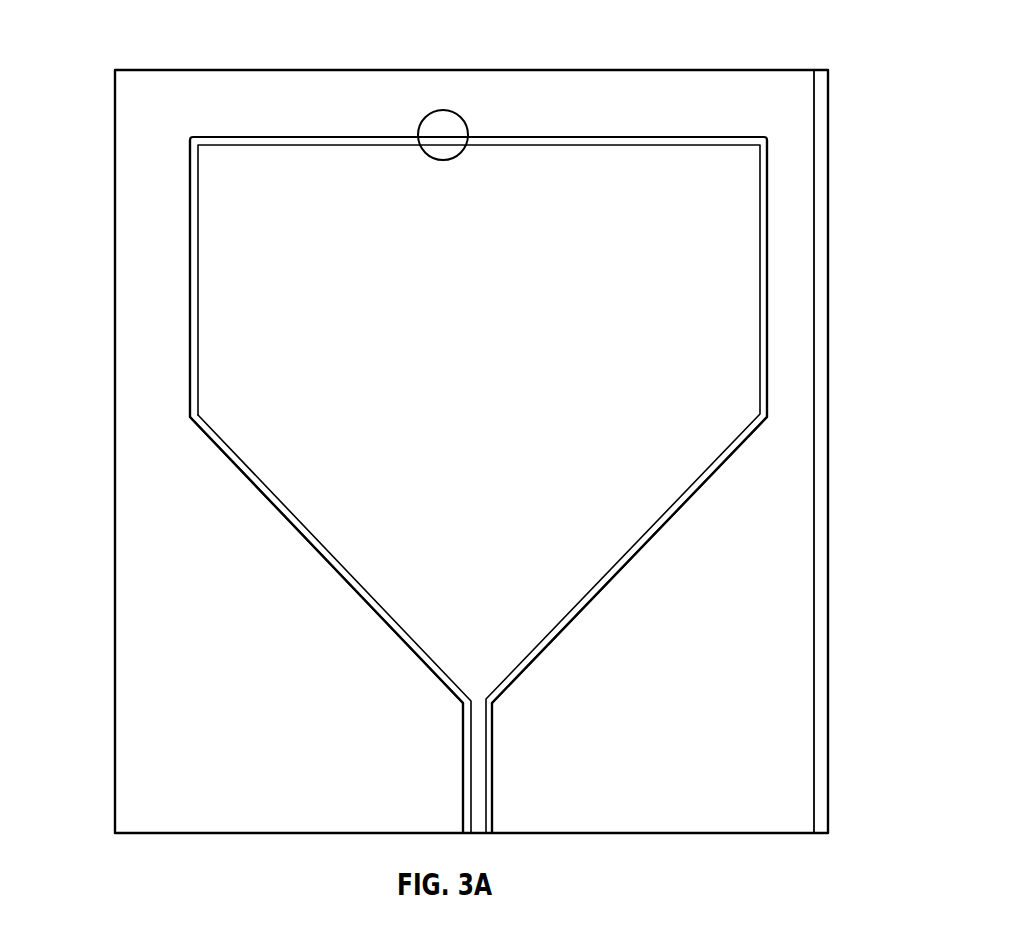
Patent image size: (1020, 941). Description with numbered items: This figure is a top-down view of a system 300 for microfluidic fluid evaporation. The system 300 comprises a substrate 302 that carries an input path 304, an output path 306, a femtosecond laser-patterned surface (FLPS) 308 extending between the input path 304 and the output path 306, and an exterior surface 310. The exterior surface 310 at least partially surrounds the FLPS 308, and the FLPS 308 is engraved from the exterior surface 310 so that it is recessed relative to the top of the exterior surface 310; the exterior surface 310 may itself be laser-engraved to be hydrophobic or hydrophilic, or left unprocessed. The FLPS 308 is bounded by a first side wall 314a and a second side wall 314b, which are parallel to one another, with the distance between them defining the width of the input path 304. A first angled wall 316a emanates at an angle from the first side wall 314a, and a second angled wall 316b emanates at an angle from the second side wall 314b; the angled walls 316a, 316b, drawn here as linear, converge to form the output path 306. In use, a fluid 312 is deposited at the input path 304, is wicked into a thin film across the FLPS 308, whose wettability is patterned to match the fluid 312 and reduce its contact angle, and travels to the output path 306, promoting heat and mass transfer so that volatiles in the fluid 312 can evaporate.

The system 300 is at (461, 424).
The substrate 302 is at (103, 349).
The input path 304 is at (466, 424).
The output path 306 is at (454, 791).
The femtosecond laser-patterned surface 308 is at (747, 345).
The exterior surface 310 is at (811, 782).
The fluid 312 is at (457, 123).
The first side wall 314a is at (190, 237).
The second side wall 314b is at (768, 200).
The first angled wall 316a is at (330, 564).
The second angled wall 316b is at (641, 549).